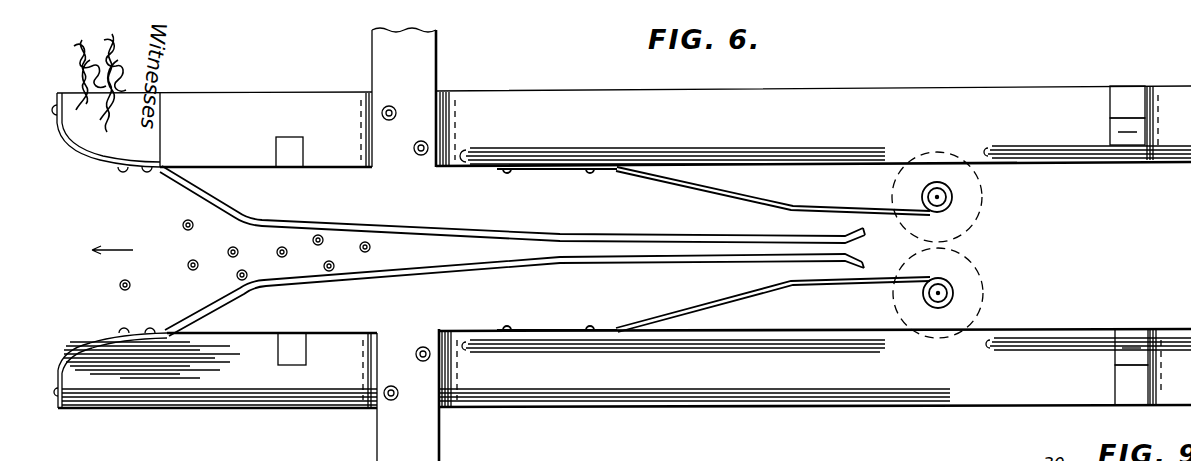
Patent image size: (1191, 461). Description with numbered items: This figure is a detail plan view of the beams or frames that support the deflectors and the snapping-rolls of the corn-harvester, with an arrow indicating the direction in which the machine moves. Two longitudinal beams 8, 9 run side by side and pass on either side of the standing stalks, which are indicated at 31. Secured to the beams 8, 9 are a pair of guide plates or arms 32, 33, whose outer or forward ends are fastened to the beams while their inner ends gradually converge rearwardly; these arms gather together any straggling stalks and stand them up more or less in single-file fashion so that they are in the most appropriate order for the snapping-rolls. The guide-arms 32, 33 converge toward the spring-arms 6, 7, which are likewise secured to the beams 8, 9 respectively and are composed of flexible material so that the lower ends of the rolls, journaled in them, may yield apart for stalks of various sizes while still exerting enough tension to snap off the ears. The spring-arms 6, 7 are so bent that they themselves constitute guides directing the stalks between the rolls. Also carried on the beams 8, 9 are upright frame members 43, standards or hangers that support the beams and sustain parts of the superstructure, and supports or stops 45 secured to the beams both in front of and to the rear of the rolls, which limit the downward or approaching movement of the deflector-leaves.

The spring-arm 6 is at (736, 194).
The spring-arm 7 is at (761, 292).
The longitudinal beam 8 is at (310, 97).
The longitudinal beam 9 is at (318, 398).
The standing stalks 31 is at (182, 222).
The guide plate or arm 32 is at (437, 231).
The guide plate or arm 33 is at (442, 272).
The upright frame member 43 is at (1127, 92).
The support or stop 45 is at (640, 143).